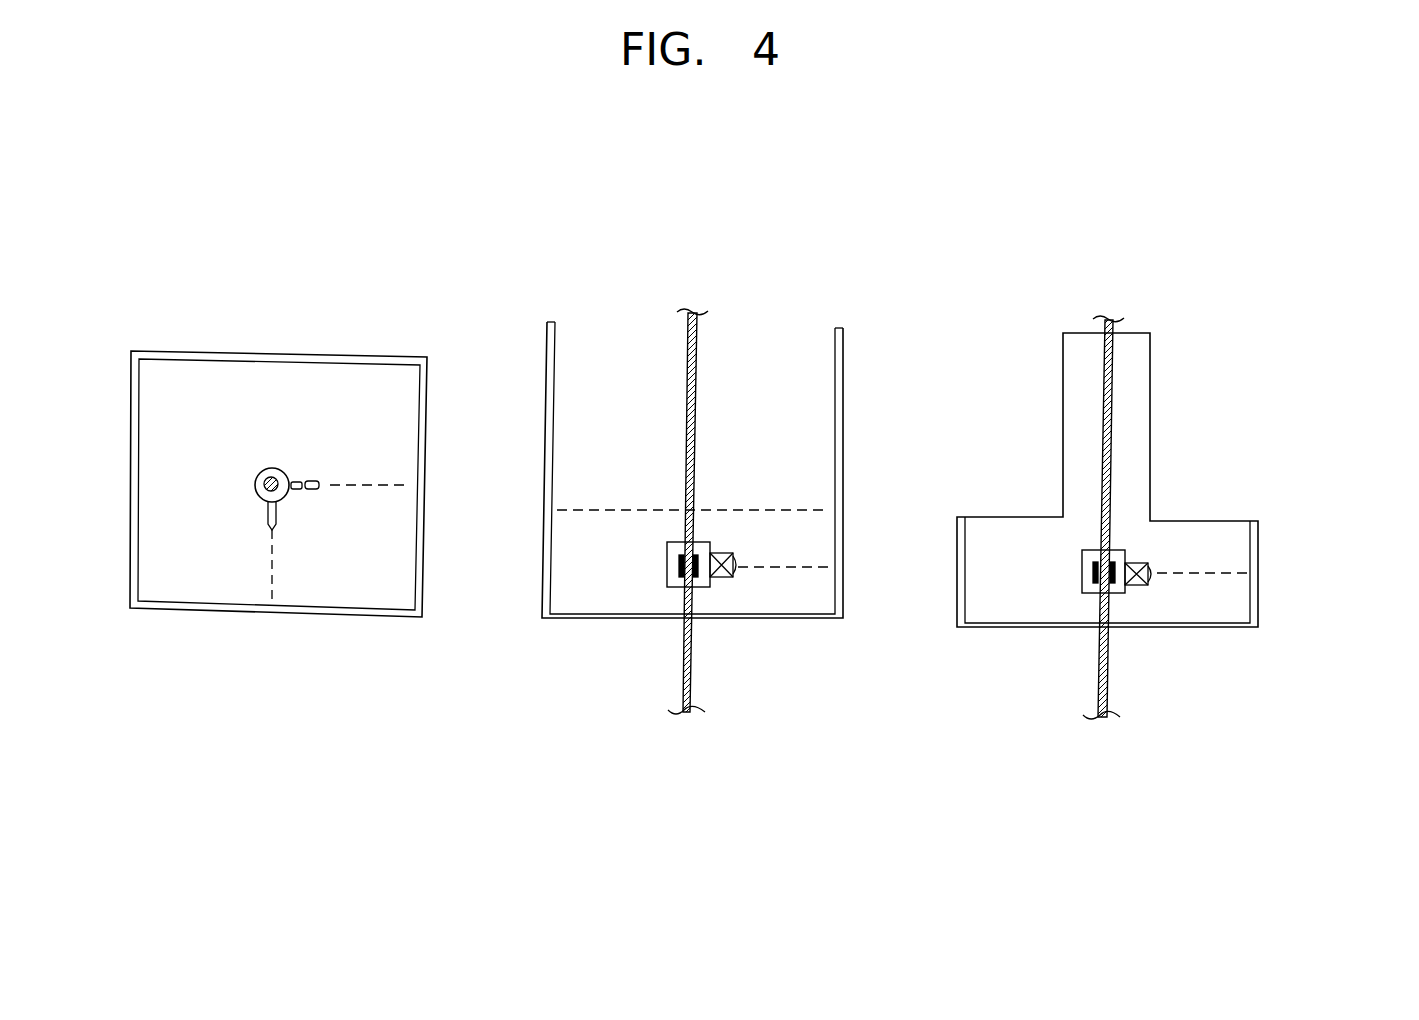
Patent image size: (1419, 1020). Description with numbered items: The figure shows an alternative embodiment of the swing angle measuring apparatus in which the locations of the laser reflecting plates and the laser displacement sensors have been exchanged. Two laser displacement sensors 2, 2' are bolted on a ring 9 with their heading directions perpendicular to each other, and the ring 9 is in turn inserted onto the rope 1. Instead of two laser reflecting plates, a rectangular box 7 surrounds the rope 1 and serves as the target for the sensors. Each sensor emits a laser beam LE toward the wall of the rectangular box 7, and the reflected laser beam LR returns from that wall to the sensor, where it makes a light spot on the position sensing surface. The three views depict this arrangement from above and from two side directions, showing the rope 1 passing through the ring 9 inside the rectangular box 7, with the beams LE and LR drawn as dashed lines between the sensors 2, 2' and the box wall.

The rope 1 is at (284, 467).
The laser displacement sensor 2 is at (776, 659).
The laser displacement sensor 2' is at (770, 570).
The rectangular box 7 is at (422, 494).
The ring 9 is at (262, 500).
The emitted laser beam LE is at (738, 563).
The reflected laser beam LR is at (753, 573).